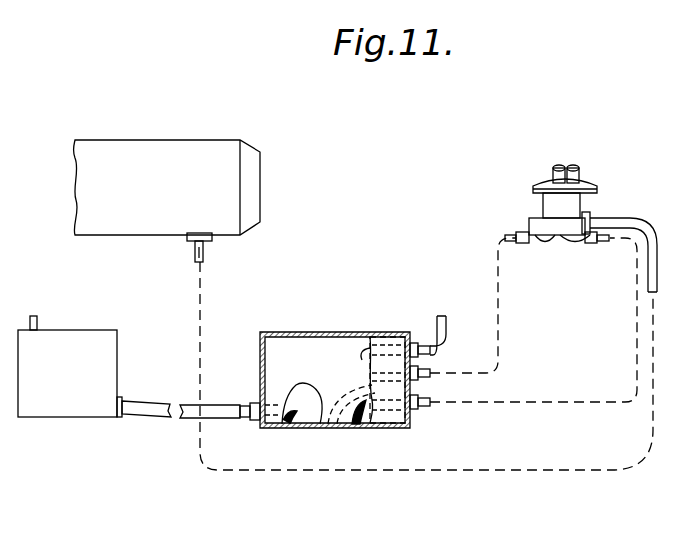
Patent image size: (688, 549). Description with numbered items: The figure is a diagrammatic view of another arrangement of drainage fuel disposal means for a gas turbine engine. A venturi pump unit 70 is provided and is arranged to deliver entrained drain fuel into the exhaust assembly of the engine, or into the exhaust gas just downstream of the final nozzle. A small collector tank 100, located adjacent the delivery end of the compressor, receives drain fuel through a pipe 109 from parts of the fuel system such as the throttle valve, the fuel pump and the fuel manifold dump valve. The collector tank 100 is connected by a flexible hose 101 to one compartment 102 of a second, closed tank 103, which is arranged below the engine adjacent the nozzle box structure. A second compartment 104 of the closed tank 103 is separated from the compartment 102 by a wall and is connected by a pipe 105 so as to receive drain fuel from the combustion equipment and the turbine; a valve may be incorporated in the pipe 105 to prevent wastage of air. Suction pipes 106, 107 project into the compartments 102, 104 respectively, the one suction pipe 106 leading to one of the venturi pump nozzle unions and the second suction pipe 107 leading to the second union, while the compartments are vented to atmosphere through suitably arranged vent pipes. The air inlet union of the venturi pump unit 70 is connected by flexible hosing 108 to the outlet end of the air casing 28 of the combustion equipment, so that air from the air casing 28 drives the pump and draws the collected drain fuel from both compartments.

The air casing 28 is at (130, 142).
The venturi pump unit 70 is at (521, 208).
The collector tank 100 is at (52, 418).
The flexible hose 101 is at (183, 413).
The compartment 102 is at (306, 375).
The closed tank 103 is at (263, 345).
The second compartment 104 is at (344, 349).
The pipe 105 is at (442, 318).
The suction pipe 106 is at (335, 408).
The second suction pipe 107 is at (360, 408).
The flexible hosing 108 is at (204, 253).
The pipe 109 is at (37, 322).